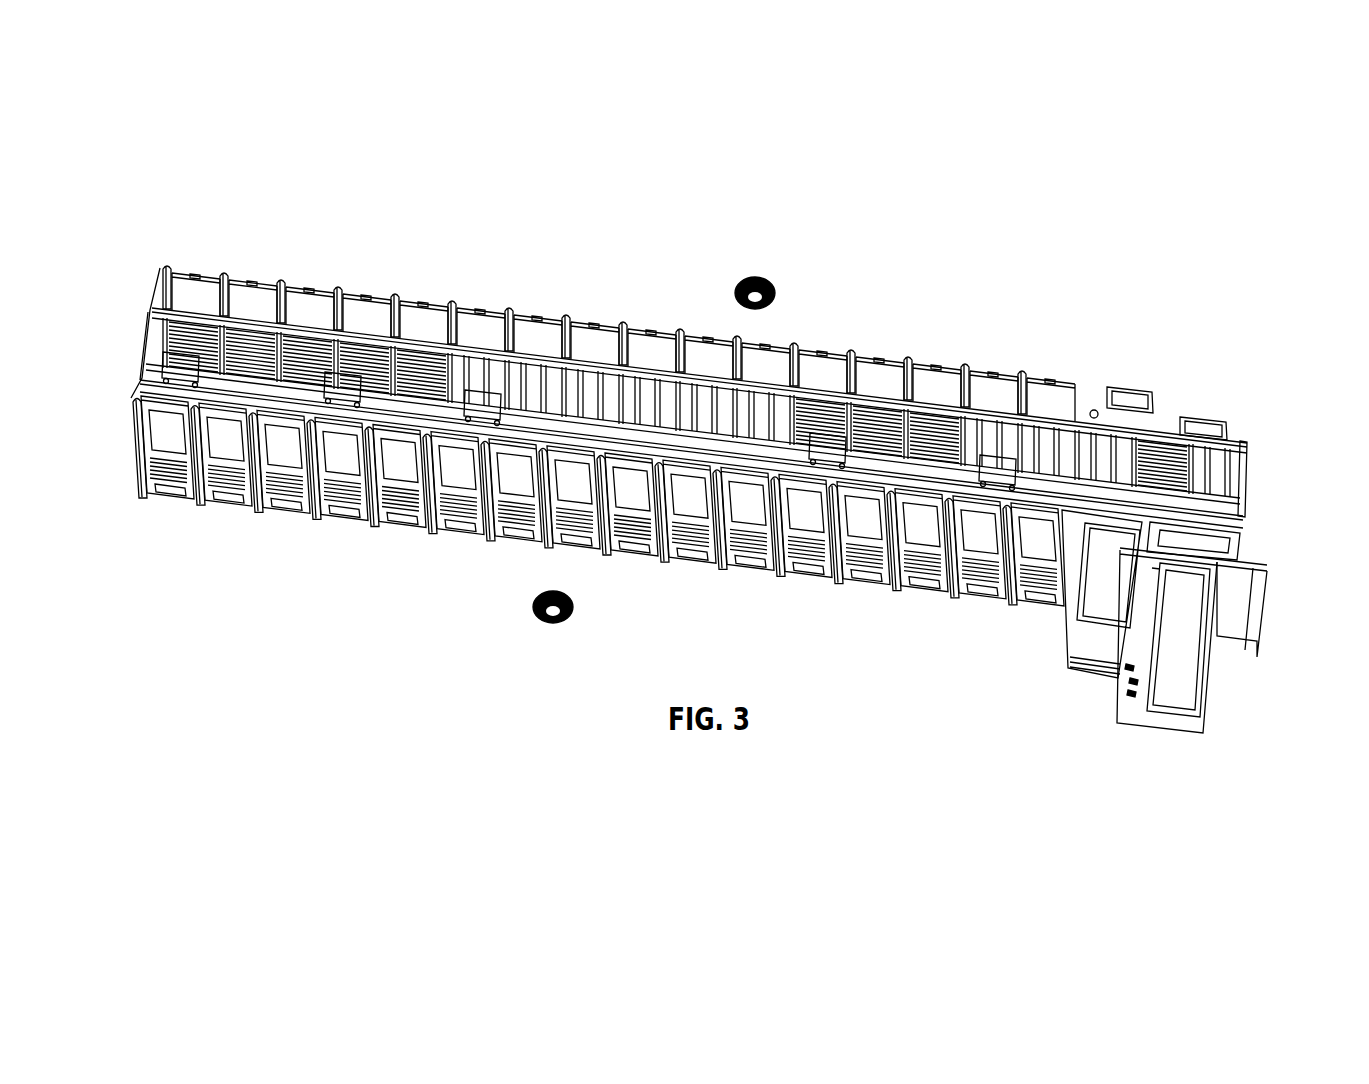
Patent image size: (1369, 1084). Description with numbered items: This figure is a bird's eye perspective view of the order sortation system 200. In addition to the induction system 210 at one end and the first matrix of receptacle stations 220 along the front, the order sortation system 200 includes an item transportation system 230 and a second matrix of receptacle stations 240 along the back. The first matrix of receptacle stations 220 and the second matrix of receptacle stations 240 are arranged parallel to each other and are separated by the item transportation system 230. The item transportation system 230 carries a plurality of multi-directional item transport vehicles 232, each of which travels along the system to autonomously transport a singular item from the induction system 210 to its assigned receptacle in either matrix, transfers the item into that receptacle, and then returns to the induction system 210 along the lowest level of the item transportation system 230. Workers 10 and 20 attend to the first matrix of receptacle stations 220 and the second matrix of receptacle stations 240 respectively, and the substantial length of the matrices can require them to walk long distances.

The order sortation system 200 is at (1152, 240).
The induction system 210 is at (1188, 748).
The first matrix of receptacle stations 220 is at (296, 548).
The item transportation system 230 is at (125, 348).
The item transport vehicle 232 is at (483, 390).
The second matrix of receptacle stations 240 is at (461, 250).
The worker 10 is at (528, 627).
The worker 20 is at (742, 280).